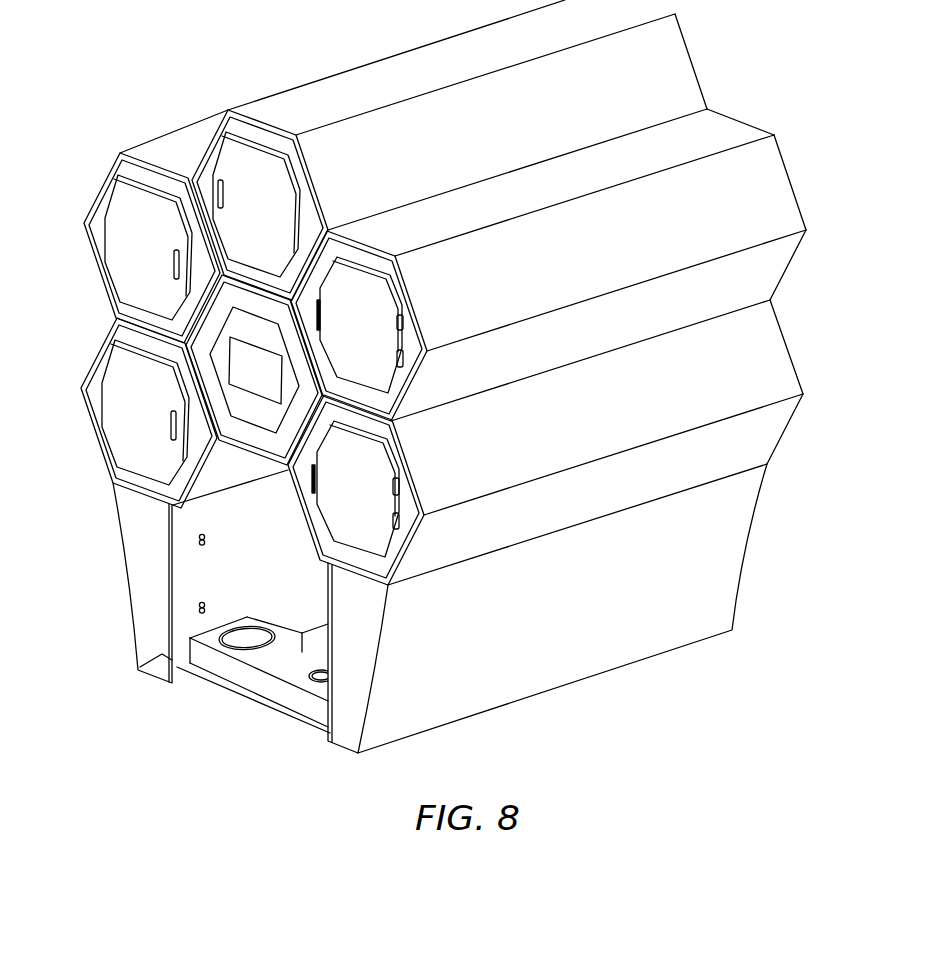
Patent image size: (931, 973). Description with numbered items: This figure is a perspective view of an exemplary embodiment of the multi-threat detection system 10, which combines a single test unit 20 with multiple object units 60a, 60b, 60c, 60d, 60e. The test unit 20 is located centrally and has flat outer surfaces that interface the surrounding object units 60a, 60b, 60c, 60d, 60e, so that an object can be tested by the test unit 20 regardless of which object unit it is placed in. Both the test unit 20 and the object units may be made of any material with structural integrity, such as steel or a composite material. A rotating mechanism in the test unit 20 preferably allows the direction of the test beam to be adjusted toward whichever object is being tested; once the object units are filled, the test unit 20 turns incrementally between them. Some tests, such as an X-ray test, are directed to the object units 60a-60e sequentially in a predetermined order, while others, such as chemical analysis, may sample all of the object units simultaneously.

The multi-threat detection system 10 is at (172, 82).
The test unit 20 is at (255, 407).
The object unit 60a is at (88, 384).
The object unit 60b is at (103, 190).
The object unit 60c is at (279, 106).
The object unit 60d is at (722, 131).
The object unit 60e is at (772, 355).